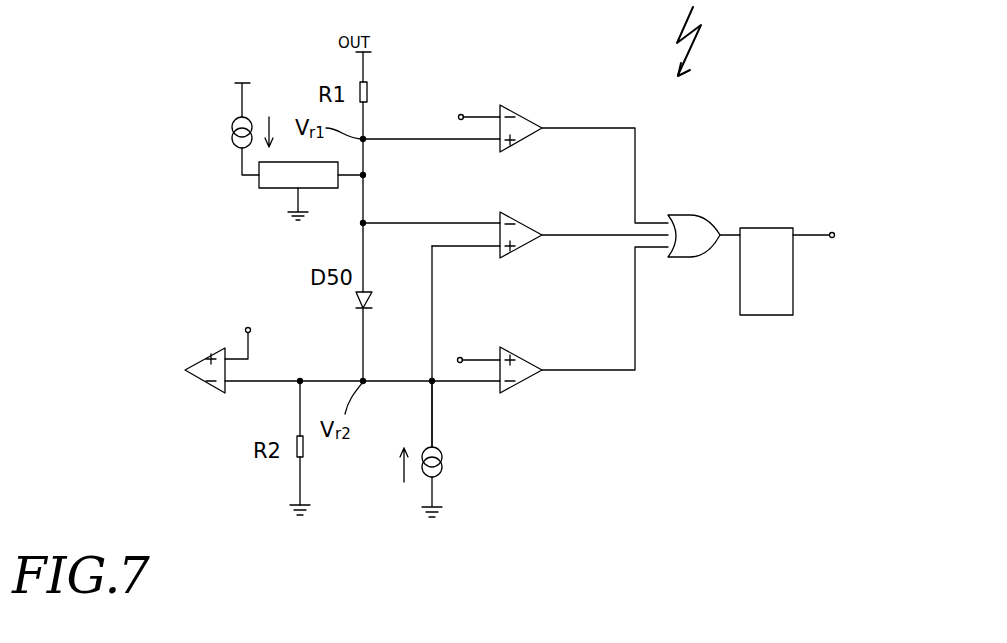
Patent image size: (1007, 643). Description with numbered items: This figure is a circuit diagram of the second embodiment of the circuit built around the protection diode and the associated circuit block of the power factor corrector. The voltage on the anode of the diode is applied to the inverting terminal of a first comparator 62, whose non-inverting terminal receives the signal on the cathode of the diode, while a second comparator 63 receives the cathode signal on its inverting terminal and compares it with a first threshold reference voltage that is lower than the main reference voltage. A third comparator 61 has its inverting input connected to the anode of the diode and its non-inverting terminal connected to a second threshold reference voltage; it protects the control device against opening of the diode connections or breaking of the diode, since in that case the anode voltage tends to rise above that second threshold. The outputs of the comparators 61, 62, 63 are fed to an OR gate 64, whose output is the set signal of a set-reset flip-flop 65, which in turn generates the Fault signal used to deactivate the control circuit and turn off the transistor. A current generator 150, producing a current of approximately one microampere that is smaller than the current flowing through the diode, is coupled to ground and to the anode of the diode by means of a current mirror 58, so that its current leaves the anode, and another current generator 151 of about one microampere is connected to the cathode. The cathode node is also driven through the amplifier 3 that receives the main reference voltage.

The operational amplifier 3 is at (200, 376).
The current mirror 58 is at (292, 189).
The third comparator 61 is at (532, 123).
The first comparator 62 is at (532, 230).
The second comparator 63 is at (532, 365).
The OR gate 64 is at (697, 228).
The set-reset flip-flop 65 is at (780, 294).
The current generator I50 150 is at (229, 129).
The current generator I51 151 is at (444, 449).